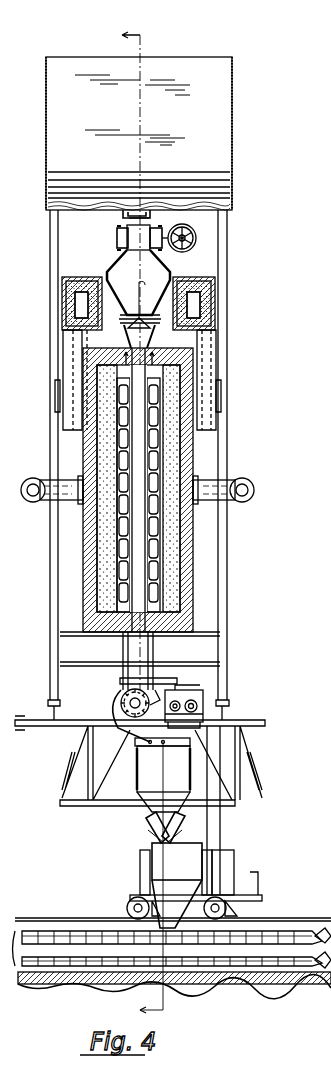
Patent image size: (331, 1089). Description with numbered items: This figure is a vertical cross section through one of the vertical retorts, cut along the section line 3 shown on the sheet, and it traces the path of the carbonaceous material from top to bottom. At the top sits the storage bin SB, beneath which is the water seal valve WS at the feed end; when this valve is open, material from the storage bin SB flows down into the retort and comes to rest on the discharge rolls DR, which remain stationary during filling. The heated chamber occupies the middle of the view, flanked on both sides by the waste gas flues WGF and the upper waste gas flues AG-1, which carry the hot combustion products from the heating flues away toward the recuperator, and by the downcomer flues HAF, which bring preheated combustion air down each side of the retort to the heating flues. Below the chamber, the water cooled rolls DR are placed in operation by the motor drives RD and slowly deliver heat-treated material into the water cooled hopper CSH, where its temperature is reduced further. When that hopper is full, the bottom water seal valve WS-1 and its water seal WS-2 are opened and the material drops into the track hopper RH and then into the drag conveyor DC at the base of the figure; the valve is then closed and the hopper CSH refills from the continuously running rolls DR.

The storage bin SB is at (139, 133).
The section line 3- 3 is at (131, 524).
The water seal valve WS is at (117, 237).
The waste gas flue WGF is at (73, 362).
The upper waste gas flue AG-1 is at (80, 305).
The downcomer flue HAF is at (252, 498).
The discharge roll DR is at (120, 701).
The motor drive RD is at (210, 690).
The water cooled hopper CSH is at (162, 775).
The water seal valve WS-1 is at (150, 830).
The water seal WS-2 is at (186, 820).
The track hopper RH is at (194, 885).
The drag conveyor DC is at (88, 940).